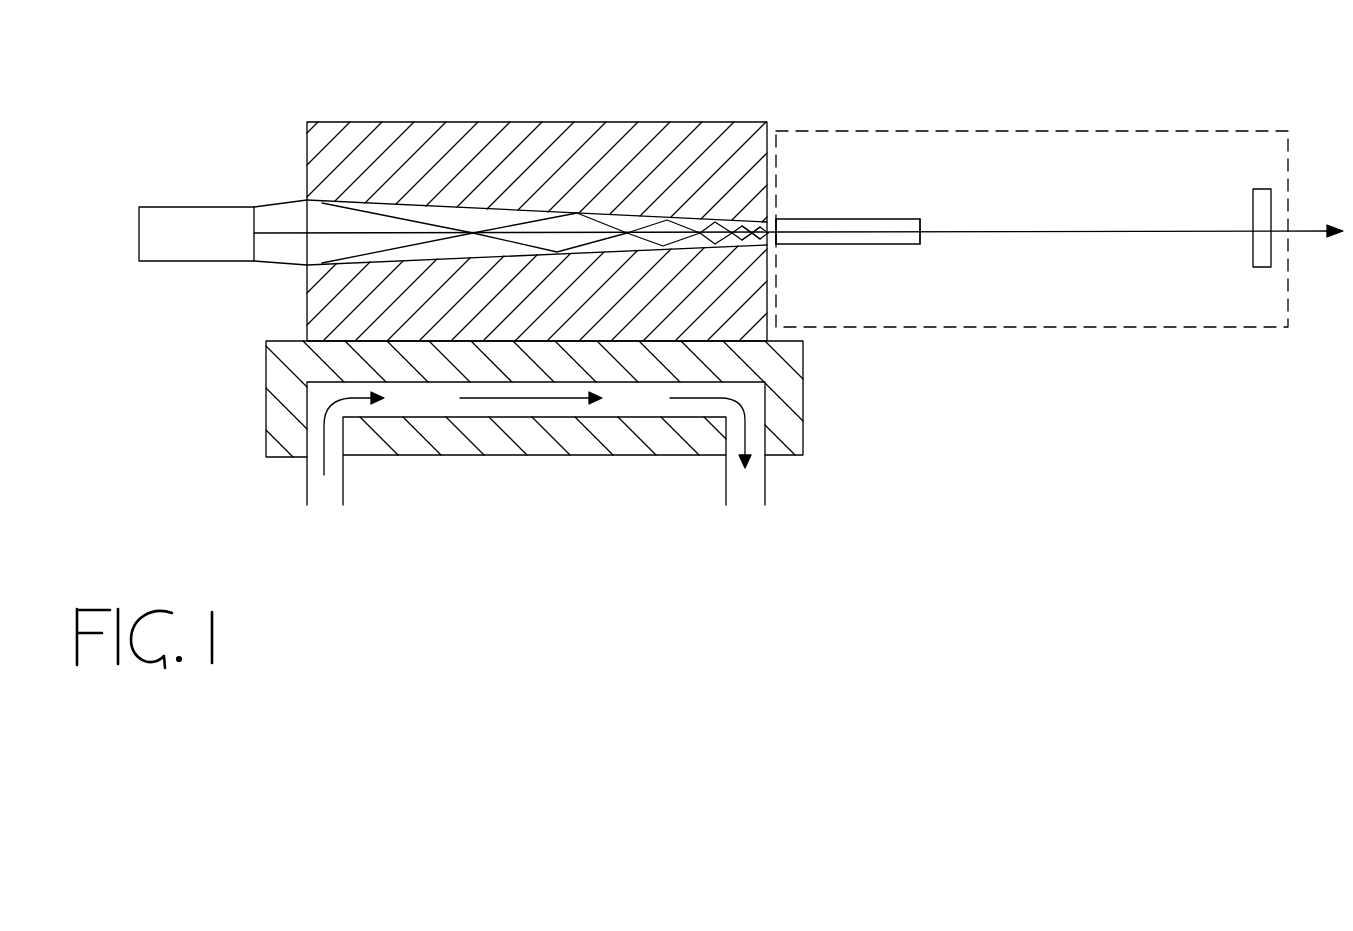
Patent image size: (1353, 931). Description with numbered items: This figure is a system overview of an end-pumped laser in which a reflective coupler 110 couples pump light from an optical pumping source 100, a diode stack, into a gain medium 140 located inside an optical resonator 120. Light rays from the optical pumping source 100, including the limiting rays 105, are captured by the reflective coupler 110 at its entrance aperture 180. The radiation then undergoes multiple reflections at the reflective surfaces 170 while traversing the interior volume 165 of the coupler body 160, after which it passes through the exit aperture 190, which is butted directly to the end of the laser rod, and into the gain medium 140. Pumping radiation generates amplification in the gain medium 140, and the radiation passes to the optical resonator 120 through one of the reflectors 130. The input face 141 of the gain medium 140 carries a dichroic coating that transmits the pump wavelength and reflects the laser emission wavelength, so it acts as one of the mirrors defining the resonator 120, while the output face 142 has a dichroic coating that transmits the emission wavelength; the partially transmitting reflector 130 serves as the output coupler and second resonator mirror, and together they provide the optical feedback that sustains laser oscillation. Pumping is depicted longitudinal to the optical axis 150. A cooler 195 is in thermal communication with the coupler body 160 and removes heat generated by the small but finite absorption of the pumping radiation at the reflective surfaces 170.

The optical pumping source 100 is at (139, 226).
The limiting rays 105 is at (263, 201).
The reflective coupler 110 is at (547, 122).
The optical resonator 120 is at (1109, 327).
The reflector 130 is at (1262, 268).
The gain medium 140 is at (847, 244).
The input face 141 is at (778, 222).
The output face 142 is at (920, 218).
The optical axis 150 is at (288, 233).
The coupler body 160 is at (625, 162).
The interior volume 165 is at (481, 223).
The reflective surfaces 170 is at (420, 200).
The entrance aperture 180 is at (300, 247).
The exit aperture 190 is at (748, 226).
The cooler 195 is at (546, 456).